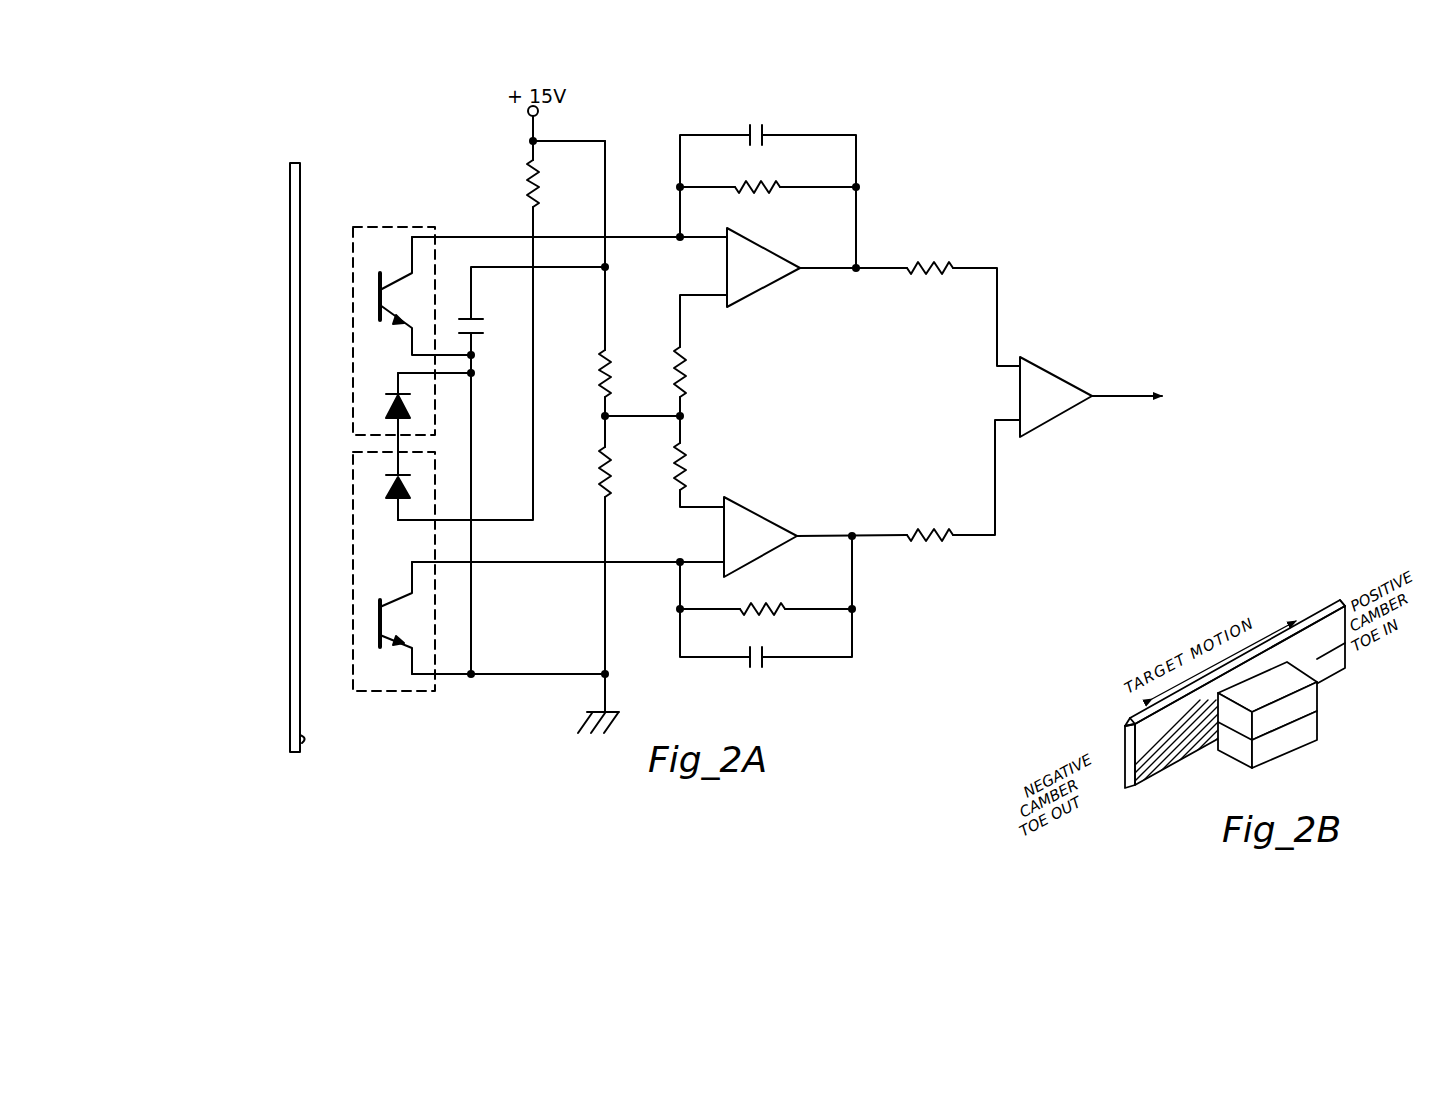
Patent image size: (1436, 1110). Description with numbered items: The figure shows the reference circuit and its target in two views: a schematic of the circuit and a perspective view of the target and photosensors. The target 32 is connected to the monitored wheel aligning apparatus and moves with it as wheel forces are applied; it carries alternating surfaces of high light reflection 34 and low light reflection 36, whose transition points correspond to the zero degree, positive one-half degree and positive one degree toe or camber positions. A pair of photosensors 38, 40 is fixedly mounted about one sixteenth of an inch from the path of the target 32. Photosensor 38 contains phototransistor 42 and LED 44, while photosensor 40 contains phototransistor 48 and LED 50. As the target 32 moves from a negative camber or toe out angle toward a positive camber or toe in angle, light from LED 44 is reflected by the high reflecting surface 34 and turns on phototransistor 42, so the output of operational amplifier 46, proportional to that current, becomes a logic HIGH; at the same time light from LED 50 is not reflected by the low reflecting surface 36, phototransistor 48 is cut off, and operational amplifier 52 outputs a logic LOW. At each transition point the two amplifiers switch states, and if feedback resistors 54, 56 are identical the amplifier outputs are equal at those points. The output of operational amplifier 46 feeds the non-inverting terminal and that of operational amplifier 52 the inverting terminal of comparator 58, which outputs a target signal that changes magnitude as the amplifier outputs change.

In FIG. 2A, the target 32 is at (300, 740).
In FIG. 2B, the target 32 is at (1168, 774).
In FIG. 2B, the high light reflecting surface 34 is at (1131, 726).
In FIG. 2B, the low light reflecting surface 36 is at (1323, 614).
In FIG. 2A, the photosensor 38 is at (410, 224).
In FIG. 2B, the photosensor 38 is at (1318, 694).
In FIG. 2A, the photosensor 40 is at (385, 693).
In FIG. 2B, the photosensor 40 is at (1275, 755).
In FIG. 2A, the phototransistor 42 is at (378, 303).
In FIG. 2A, the LED 44 is at (386, 405).
In FIG. 2A, the operational amplifier 46 is at (765, 290).
In FIG. 2A, the phototransistor 48 is at (380, 607).
In FIG. 2A, the LED 50 is at (386, 488).
In FIG. 2A, the operational amplifier 52 is at (742, 505).
In FIG. 2A, the feedback resistor 54 is at (778, 185).
In FIG. 2A, the feedback resistor 56 is at (770, 605).
In FIG. 2A, the comparator 58 is at (1043, 368).